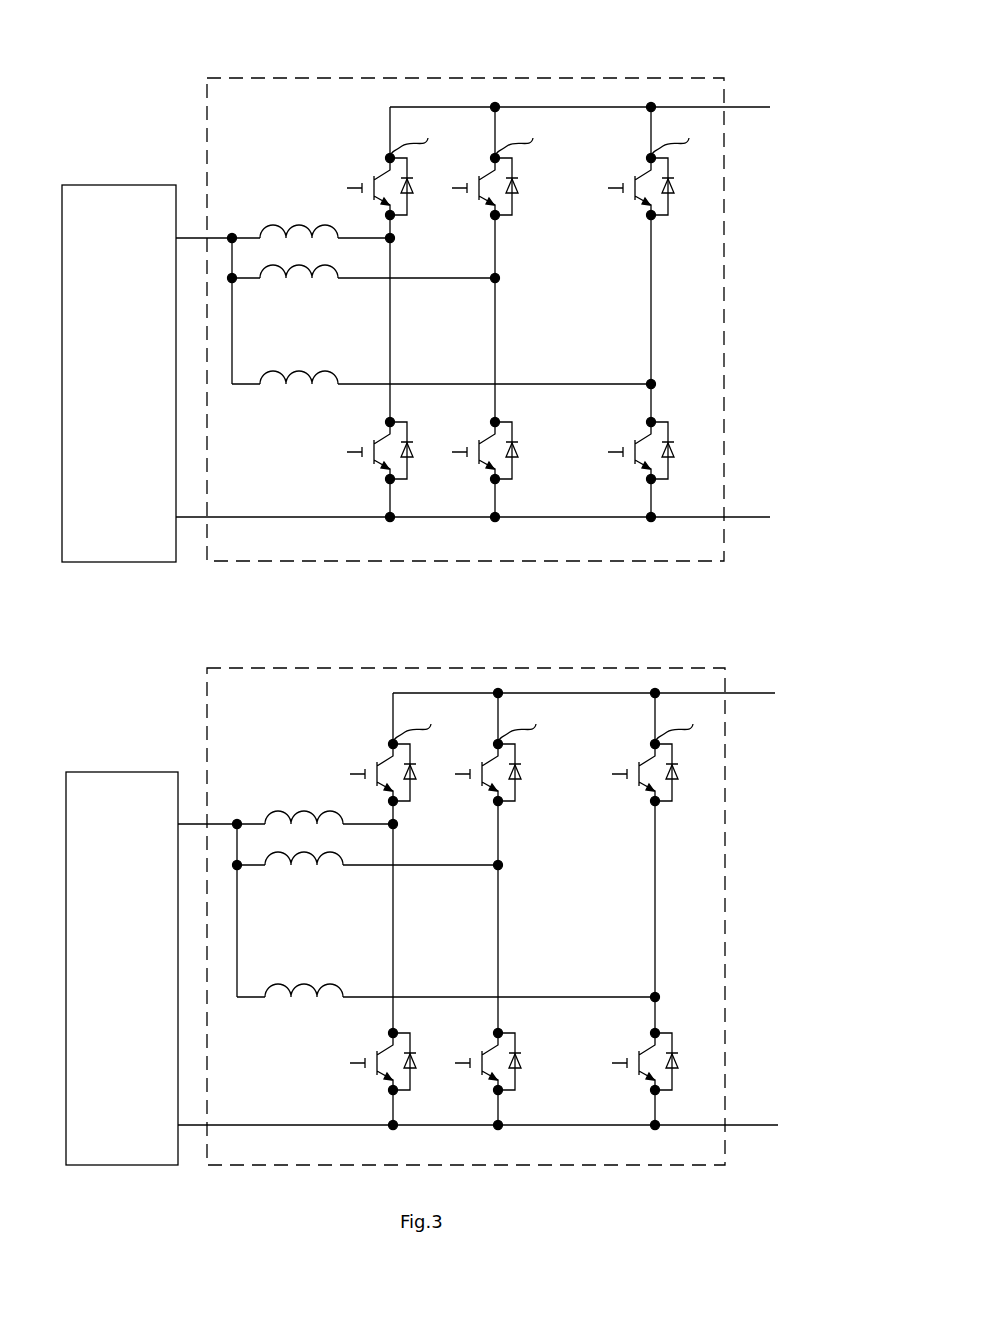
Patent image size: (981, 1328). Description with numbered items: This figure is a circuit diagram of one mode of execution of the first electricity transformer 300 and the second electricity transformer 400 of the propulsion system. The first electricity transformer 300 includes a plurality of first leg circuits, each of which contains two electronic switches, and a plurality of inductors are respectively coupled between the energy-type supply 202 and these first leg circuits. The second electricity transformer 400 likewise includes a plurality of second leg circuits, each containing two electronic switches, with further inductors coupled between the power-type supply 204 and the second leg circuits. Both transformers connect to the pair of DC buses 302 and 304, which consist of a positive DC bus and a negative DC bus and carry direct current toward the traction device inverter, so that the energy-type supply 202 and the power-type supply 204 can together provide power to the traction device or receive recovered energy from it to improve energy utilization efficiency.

The energy-type supply 202 is at (118, 185).
The power-type supply 204 is at (120, 772).
The first electricity transformer 300 is at (470, 78).
The second electricity transformer 400 is at (468, 668).
The DC bus 302 is at (738, 107).
The DC bus 304 is at (740, 517).